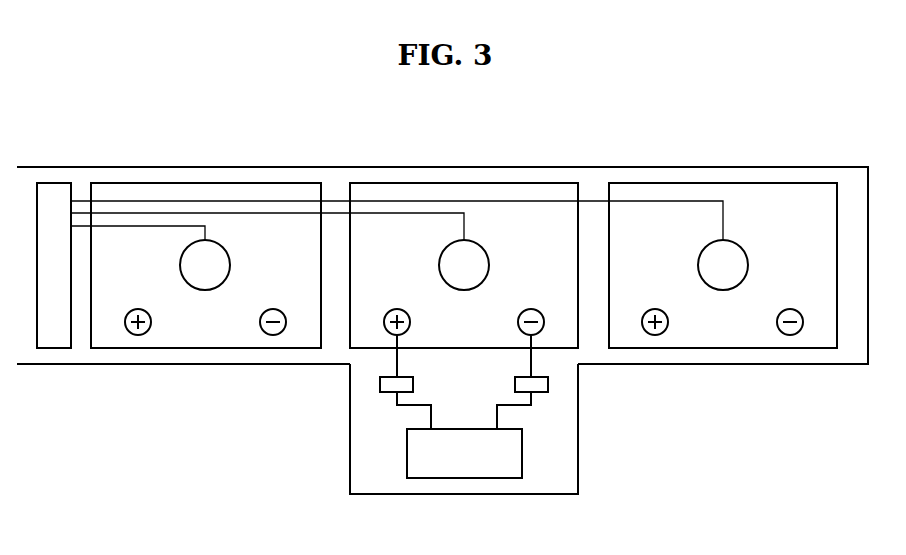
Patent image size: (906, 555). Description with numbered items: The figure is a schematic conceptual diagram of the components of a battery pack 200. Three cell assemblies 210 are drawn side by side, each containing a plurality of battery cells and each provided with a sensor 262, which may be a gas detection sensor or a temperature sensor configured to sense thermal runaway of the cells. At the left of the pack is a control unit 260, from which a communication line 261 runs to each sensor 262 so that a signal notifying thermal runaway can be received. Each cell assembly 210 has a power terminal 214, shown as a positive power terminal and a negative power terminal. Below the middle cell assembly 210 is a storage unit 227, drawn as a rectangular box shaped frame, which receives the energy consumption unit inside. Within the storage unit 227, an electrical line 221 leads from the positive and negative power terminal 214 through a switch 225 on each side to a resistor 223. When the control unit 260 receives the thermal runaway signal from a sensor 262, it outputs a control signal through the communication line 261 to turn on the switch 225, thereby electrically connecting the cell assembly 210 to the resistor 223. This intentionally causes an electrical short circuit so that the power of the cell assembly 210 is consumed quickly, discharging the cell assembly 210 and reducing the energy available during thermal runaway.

The battery pack 200 is at (782, 165).
The cell assembly 210 is at (145, 183).
The power terminal 214 is at (260, 321).
The electrical line 221 is at (412, 407).
The resistor 223 is at (461, 478).
The switch 225 is at (379, 384).
The storage unit 227 is at (350, 455).
The control unit 260 is at (57, 348).
The communication line 261 is at (82, 199).
The sensor 262 is at (224, 249).